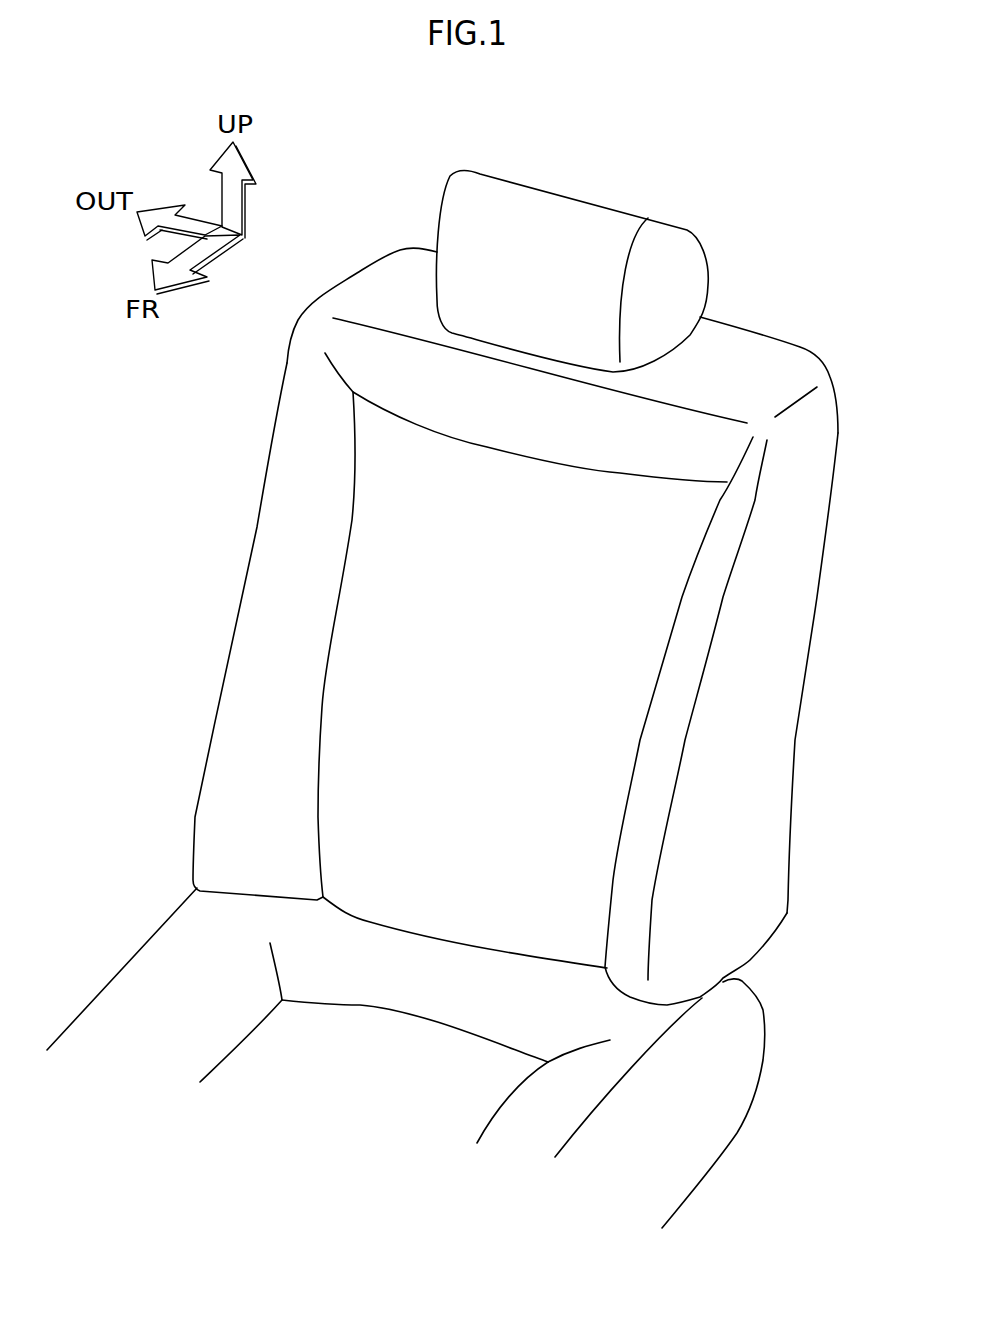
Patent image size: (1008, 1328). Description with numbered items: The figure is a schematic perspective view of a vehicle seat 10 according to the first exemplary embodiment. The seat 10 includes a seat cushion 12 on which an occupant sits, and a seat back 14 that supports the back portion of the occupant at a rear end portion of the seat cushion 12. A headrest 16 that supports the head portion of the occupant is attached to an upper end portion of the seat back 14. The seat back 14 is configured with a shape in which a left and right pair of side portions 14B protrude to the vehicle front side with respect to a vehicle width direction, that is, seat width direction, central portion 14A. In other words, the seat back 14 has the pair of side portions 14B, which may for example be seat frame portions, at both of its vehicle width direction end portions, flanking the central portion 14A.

The vehicle seat 10 is at (203, 430).
The seat cushion 12 is at (128, 990).
The seat back 14 is at (237, 594).
The central portion 14A is at (483, 630).
The side portions 14B is at (272, 530).
The headrest 16 is at (582, 213).